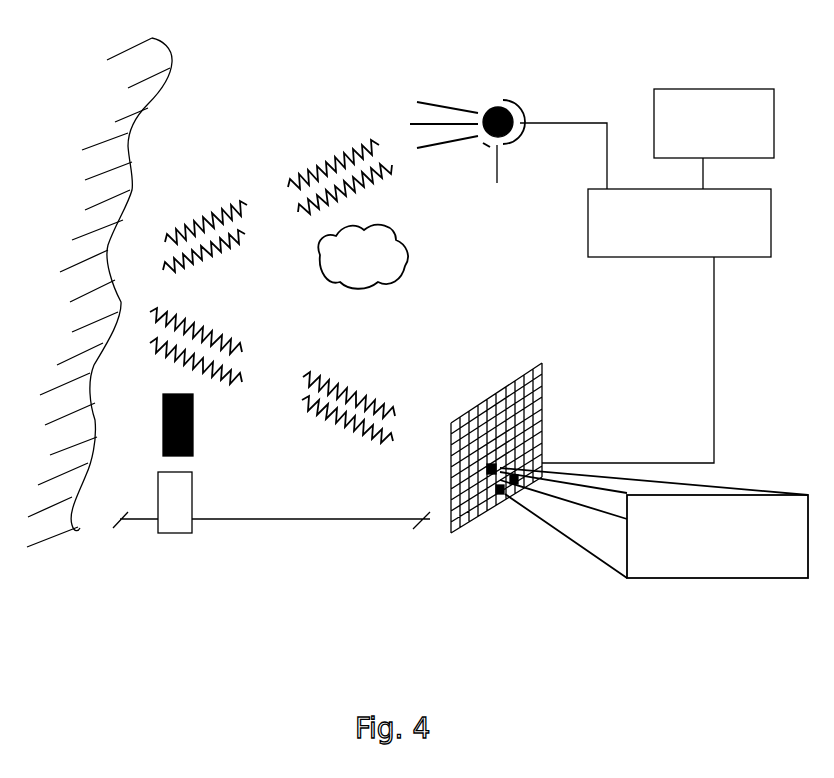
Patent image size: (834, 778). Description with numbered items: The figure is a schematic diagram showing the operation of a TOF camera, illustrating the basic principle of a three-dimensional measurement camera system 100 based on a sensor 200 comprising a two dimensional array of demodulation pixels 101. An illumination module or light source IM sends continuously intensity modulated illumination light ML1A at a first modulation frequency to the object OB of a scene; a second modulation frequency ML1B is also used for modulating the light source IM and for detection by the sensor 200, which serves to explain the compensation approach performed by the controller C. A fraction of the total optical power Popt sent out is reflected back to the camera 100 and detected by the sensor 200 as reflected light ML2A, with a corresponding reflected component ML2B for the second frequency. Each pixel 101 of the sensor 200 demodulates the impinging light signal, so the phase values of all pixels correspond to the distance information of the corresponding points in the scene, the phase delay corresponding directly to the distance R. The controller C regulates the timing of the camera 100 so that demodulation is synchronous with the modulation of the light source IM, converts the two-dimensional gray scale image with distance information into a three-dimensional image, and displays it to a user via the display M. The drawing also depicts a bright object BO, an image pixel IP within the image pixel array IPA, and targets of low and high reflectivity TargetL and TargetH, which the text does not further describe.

The 3D-measurement camera system 100 is at (628, 70).
The sensor 200 is at (542, 364).
The demodulation pixel 101 is at (743, 580).
The illumination module IM is at (490, 107).
The object OB is at (134, 172).
The illumination light at a first modulation frequency ML1A is at (342, 152).
The illumination light at a second modulation frequency ML1B is at (385, 173).
The reflected light ML2A is at (358, 381).
The modulated light reflected ML2B is at (320, 412).
The optical power Popt is at (370, 460).
The bright object BO is at (410, 260).
The display M is at (714, 123).
The controller C is at (656, 310).
The image pixel IP is at (488, 508).
The image pixel array IPA is at (452, 547).
The distance R is at (271, 531).
The low-reflectivity target TargetL is at (196, 420).
The high-reflectivity target TargetH is at (125, 527).